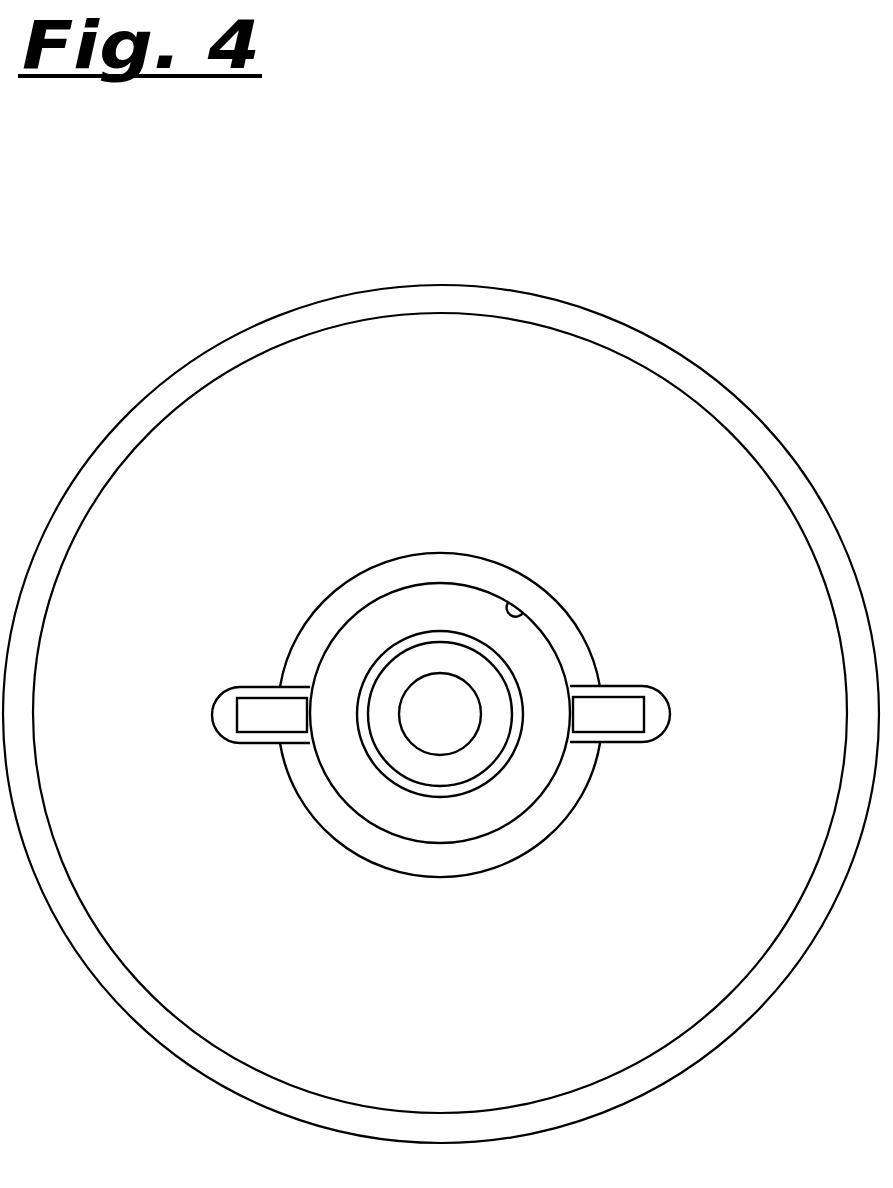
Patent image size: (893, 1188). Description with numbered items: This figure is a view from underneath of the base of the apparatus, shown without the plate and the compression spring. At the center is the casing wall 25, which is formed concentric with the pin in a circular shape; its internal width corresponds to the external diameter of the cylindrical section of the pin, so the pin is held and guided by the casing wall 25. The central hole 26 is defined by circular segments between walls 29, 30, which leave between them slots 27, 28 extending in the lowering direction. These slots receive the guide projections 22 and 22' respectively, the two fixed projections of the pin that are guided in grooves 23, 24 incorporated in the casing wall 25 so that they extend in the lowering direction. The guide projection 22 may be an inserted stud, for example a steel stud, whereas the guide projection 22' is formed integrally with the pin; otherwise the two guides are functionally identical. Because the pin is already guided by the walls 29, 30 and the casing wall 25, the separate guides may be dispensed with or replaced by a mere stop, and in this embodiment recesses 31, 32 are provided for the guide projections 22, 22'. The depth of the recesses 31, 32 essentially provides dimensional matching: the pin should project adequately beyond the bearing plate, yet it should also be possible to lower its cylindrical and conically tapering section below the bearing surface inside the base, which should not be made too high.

The guide projection 22 is at (251, 622).
The guide projection 22' is at (645, 766).
The groove 23 is at (297, 688).
The groove 24 is at (593, 684).
The casing wall 25 is at (524, 614).
The central hole 26 is at (355, 815).
The slot 27 is at (607, 772).
The slot 28 is at (256, 763).
The wall 29 is at (492, 580).
The wall 30 is at (432, 857).
The recess 31 is at (228, 712).
The recess 32 is at (658, 712).